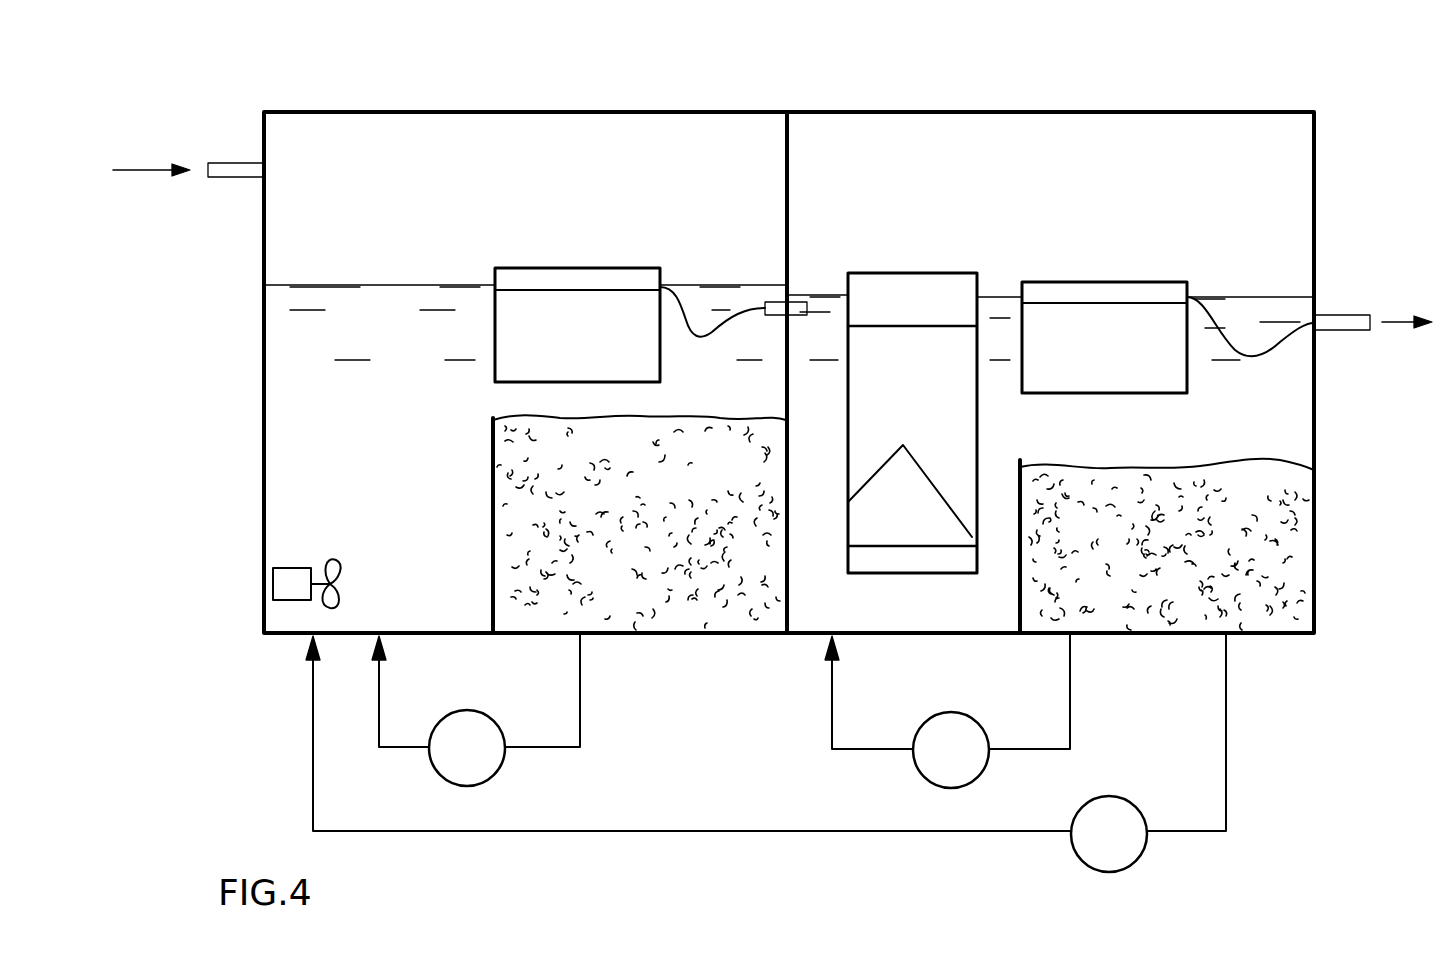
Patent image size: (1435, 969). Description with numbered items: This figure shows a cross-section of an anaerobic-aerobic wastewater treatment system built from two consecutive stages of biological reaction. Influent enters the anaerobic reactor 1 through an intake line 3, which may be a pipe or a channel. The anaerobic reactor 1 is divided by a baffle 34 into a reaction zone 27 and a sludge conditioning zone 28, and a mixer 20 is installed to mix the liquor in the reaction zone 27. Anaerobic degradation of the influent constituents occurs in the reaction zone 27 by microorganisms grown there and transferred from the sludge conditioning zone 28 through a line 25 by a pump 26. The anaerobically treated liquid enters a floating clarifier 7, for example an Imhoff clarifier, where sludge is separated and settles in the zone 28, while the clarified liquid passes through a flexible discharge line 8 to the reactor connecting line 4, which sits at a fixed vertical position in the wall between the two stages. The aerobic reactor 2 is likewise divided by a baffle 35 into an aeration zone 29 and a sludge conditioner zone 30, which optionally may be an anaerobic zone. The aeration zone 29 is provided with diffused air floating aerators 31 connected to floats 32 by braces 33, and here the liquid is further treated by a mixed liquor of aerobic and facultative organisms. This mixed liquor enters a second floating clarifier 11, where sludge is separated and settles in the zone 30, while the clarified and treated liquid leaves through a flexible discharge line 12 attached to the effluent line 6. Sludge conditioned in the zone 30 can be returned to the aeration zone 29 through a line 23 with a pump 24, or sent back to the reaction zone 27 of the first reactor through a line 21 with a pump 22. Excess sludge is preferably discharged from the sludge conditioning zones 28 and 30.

The anaerobic reactor 1 is at (476, 110).
The aerobic reactor 2 is at (985, 112).
The intake line 3 is at (240, 180).
The reactor connecting line 4 is at (788, 301).
The effluent line 6 is at (1340, 315).
The floating clarifier 7 is at (522, 280).
The discharge line 8 is at (693, 330).
The floating clarifier 11 is at (1063, 280).
The discharge line 12 is at (1278, 350).
The mixer 20 is at (311, 565).
The line 21 is at (310, 778).
The pump 22 is at (1128, 798).
The line 23 is at (830, 727).
The pump 24 is at (953, 713).
The line 25 is at (381, 719).
The pump 26 is at (495, 773).
The reaction zone 27 is at (392, 455).
The sludge conditioning zone 28 is at (608, 513).
The aeration zone 29 is at (861, 623).
The sludge conditioner zone 30 is at (1110, 573).
The diffused air floating aerators 31 is at (912, 556).
The floats 32 is at (907, 270).
The braces 33 is at (910, 470).
The baffle 34 is at (489, 470).
The baffle 35 is at (1022, 527).